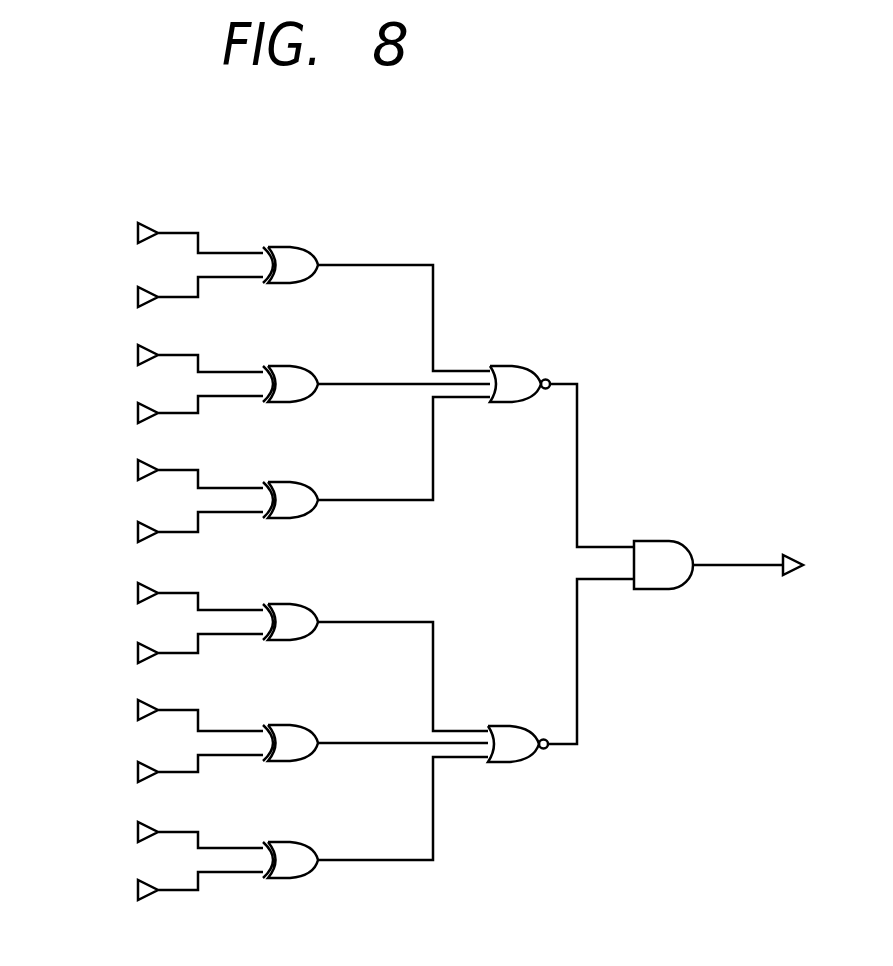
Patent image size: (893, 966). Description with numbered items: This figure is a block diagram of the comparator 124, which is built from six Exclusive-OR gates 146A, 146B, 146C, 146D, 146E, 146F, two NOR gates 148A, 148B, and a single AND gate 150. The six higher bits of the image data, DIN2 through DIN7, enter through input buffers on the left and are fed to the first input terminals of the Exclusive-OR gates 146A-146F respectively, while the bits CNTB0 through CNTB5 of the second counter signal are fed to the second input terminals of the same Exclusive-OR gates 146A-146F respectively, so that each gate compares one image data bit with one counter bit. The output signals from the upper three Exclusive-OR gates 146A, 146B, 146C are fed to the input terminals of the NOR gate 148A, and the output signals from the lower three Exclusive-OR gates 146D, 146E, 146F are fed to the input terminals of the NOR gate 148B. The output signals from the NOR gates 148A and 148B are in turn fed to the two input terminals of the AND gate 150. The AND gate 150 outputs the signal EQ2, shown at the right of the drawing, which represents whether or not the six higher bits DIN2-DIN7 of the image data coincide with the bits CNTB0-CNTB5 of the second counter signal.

The comparator 124 is at (517, 236).
The Exclusive-OR gate 146A is at (308, 251).
The Exclusive-OR gate 146B is at (308, 370).
The Exclusive-OR gate 146C is at (308, 486).
The Exclusive-OR gate 146D is at (308, 608).
The Exclusive-OR gate 146E is at (308, 729).
The Exclusive-OR gate 146F is at (308, 846).
The NOR gate 148A is at (533, 370).
The NOR gate 148B is at (512, 725).
The AND gate 150 is at (655, 591).